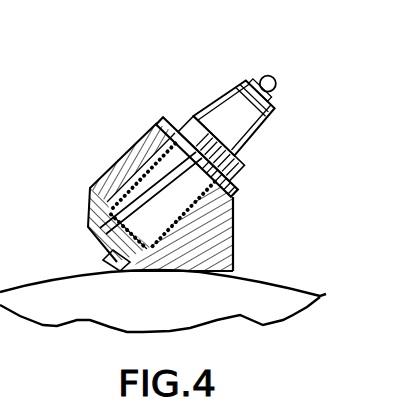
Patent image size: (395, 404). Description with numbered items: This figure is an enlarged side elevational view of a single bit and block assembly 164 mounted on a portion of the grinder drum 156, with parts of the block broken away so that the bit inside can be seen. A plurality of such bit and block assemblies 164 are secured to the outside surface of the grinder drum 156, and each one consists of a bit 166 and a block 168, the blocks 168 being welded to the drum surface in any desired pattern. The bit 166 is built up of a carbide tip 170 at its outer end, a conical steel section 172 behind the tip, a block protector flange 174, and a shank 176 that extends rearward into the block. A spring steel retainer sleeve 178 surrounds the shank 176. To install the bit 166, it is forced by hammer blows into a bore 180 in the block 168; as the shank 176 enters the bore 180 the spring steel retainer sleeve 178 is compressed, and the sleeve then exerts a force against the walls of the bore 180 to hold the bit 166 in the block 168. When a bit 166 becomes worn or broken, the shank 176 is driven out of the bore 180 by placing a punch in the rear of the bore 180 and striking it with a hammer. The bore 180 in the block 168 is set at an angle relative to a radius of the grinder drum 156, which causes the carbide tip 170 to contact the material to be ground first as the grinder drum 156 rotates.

The grinder drum 156 is at (95, 300).
The bit and block assembly 164 is at (133, 116).
The bit 166 is at (264, 136).
The block 168 is at (234, 228).
The carbide tip 170 is at (280, 78).
The conical steel section 172 is at (196, 113).
The block protector flange 174 is at (161, 122).
The shank 176 is at (107, 189).
The spring steel retainer sleeve 178 is at (236, 222).
The bore 180 is at (230, 263).